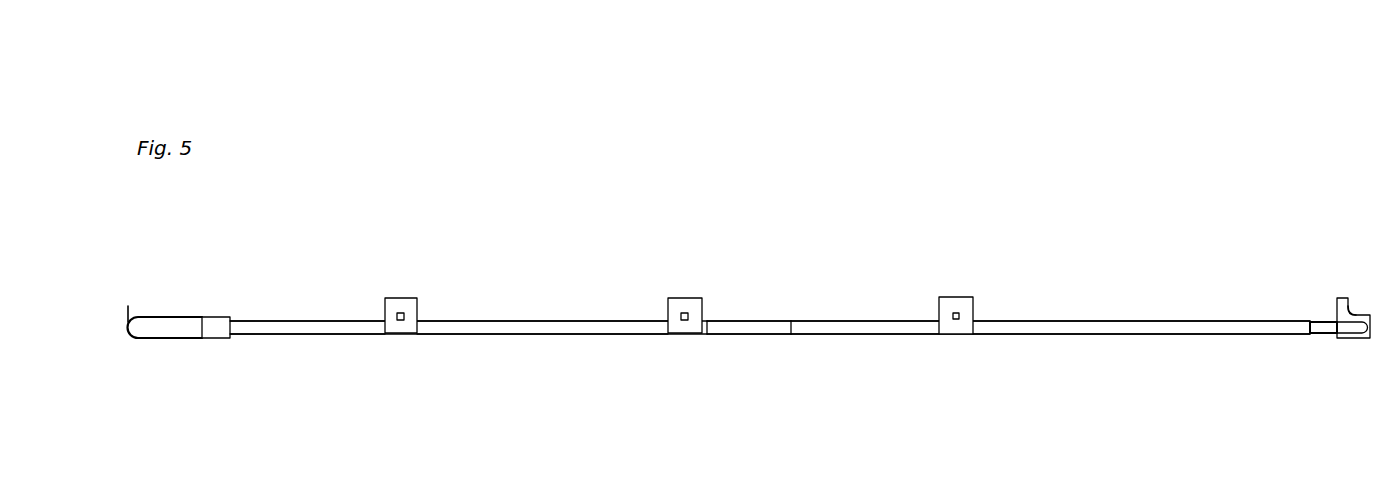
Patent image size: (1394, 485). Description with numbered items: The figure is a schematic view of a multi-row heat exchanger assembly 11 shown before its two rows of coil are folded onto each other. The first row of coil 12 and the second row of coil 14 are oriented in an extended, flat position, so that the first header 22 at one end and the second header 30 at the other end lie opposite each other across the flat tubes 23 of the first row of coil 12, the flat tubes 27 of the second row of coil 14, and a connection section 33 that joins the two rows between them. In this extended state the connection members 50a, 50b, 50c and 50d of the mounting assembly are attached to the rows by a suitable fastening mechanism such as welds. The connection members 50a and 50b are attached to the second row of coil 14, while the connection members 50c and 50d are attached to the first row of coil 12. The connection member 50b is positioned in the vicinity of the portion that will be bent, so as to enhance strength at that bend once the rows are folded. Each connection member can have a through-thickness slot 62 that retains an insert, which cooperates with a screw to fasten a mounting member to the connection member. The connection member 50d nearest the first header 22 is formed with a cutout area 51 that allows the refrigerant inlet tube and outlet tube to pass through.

The multi-row heat exchanger assembly 11 is at (891, 184).
The first row of coil 12 is at (1042, 336).
The second row of coil 14 is at (553, 336).
The first header 22 is at (1372, 330).
The flat tubes 23 is at (862, 336).
The flat tubes 27 is at (330, 336).
The second header 30 is at (128, 336).
The connection section 33 is at (745, 320).
The connection member 50a is at (405, 297).
The connection member 50b is at (692, 297).
The connection member 50c is at (963, 297).
The connection member 50d is at (1344, 298).
The cutout area 51 is at (1353, 311).
The through-thickness slot 62 is at (400, 322).